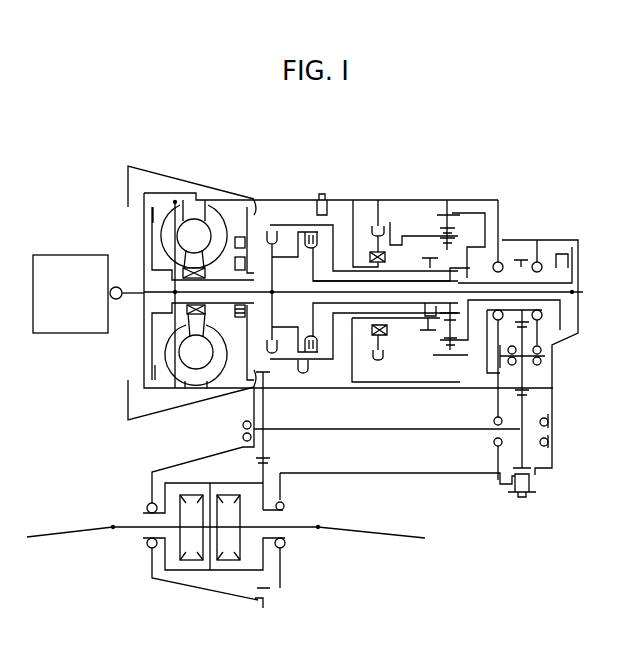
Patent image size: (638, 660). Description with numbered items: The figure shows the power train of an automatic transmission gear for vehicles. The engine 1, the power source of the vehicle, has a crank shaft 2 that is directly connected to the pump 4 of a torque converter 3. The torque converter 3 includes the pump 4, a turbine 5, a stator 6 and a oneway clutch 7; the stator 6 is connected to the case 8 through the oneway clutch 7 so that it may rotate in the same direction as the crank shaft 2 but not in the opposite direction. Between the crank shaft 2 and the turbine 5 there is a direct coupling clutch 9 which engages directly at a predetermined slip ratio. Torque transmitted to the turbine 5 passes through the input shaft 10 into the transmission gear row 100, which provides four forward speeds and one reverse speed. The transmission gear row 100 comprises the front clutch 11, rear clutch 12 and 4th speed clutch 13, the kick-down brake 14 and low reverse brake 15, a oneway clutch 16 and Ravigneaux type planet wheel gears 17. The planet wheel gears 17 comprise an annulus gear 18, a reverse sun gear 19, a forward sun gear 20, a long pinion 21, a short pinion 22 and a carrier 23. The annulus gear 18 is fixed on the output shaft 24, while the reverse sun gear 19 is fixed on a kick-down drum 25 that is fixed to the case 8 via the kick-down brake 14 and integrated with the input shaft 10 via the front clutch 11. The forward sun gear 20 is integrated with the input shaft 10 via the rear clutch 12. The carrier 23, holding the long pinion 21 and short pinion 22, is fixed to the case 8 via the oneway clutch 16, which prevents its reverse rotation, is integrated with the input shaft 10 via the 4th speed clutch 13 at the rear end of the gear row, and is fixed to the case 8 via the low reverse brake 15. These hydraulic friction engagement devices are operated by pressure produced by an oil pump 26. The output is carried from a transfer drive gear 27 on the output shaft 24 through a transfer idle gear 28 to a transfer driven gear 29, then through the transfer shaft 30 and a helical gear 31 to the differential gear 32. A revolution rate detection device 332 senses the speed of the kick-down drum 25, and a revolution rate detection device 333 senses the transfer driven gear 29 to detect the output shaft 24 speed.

The engine 1 is at (66, 256).
The crank shaft 2 is at (134, 290).
The torque converter 3 is at (175, 201).
The pump 4 is at (221, 350).
The turbine 5 is at (170, 380).
The stator 6 is at (196, 346).
The oneway clutch 7 is at (176, 310).
The case 8 is at (255, 206).
The direct coupling clutch 9 is at (144, 237).
The input shaft 10 is at (188, 296).
The front clutch 11 is at (357, 288).
The rear clutch 12 is at (312, 231).
The 4th speed clutch 13 is at (574, 254).
The kick-down brake 14 is at (298, 231).
The low reverse brake 15 is at (376, 243).
The oneway clutch 16 is at (390, 245).
The Ravigneaux type planet wheel gears 17 is at (455, 215).
The annulus gear 18 is at (472, 216).
The reverse sun gear 19 is at (423, 258).
The forward sun gear 20 is at (499, 208).
The long pinion 21 is at (447, 212).
The short pinion 22 is at (472, 342).
The carrier 23 is at (480, 246).
The output shaft 24 is at (540, 261).
The kick-down drum 25 is at (323, 237).
The oil pump 26 is at (238, 236).
The transfer drive gear 27 is at (521, 259).
The transfer idle gear 28 is at (550, 360).
The transfer driven gear 29 is at (526, 455).
The transfer shaft 30 is at (376, 432).
The helical gear 31 is at (269, 455).
The differential gear 32 is at (216, 584).
The transmission gear row 100 is at (391, 184).
The revolution rate detection device 332 is at (321, 193).
The revolution rate detection device 333 is at (538, 490).